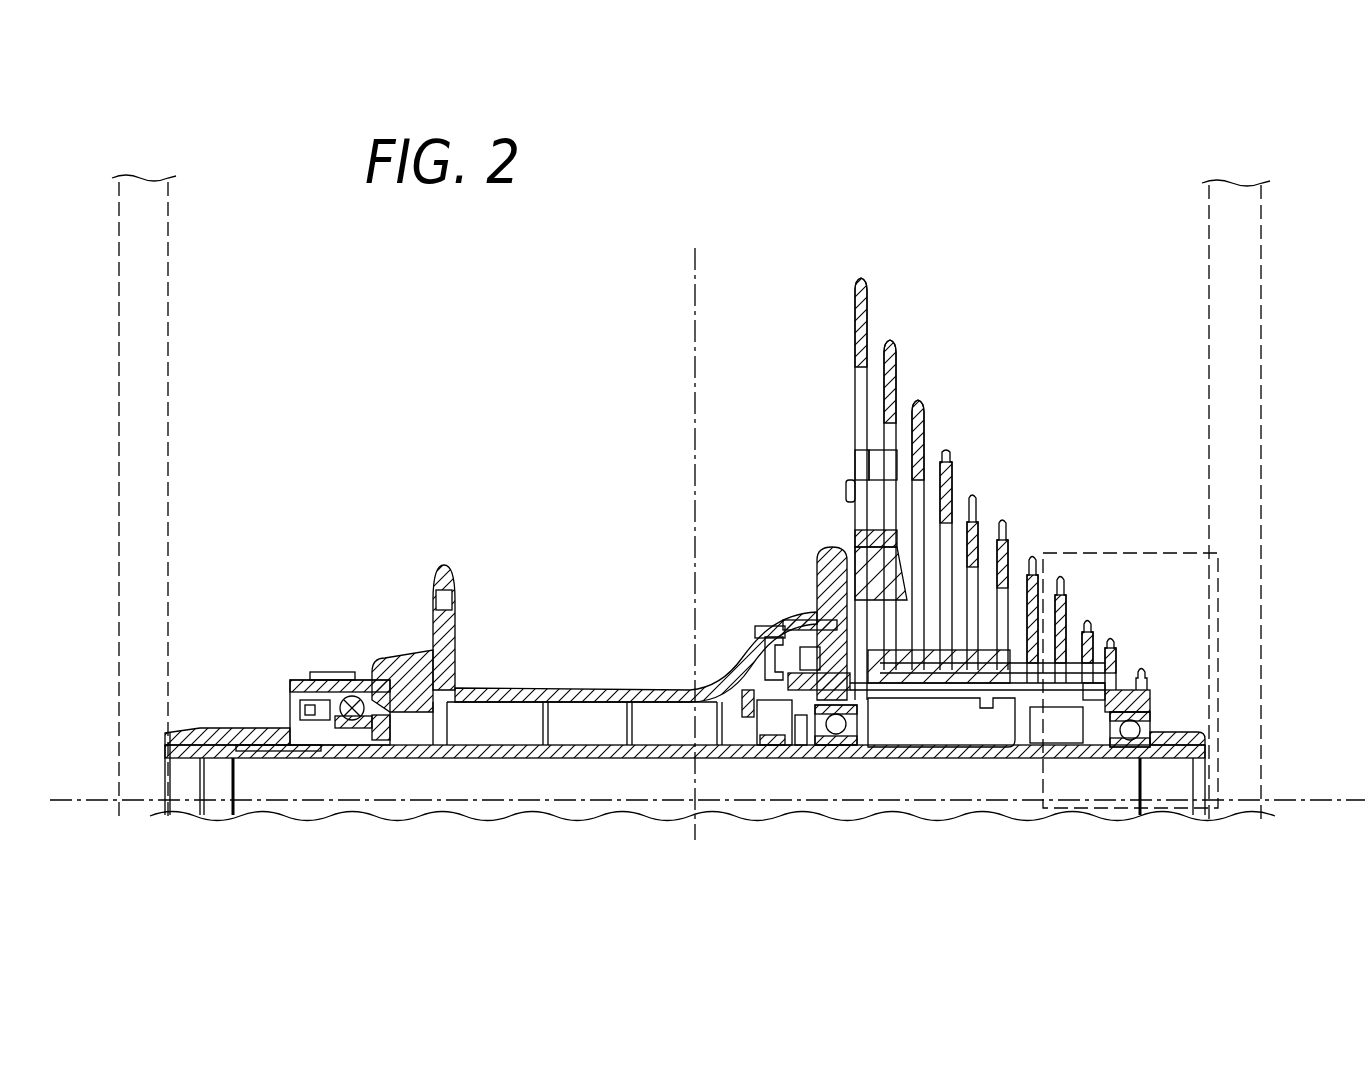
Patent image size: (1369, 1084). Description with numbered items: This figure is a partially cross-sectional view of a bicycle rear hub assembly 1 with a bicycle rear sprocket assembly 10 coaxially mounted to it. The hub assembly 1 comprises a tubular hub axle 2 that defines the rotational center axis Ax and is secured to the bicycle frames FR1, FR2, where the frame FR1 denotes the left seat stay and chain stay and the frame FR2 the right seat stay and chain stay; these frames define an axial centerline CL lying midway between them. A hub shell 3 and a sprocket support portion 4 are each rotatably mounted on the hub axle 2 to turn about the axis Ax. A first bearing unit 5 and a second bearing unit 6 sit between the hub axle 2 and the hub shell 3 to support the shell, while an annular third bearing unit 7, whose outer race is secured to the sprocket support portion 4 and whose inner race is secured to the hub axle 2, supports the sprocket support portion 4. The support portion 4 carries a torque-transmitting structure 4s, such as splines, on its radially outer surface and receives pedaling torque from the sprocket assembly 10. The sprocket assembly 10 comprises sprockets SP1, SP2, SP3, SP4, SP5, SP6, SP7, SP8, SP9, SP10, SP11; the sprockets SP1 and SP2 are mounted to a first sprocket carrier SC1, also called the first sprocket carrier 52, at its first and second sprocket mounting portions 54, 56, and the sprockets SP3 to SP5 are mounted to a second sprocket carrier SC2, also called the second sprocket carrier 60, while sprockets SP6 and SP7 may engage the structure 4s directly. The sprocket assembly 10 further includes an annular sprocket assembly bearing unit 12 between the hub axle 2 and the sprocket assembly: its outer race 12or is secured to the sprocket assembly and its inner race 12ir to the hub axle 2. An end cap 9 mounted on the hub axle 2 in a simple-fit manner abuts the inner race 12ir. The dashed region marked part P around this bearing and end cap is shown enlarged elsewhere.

The bicycle rear hub assembly 1 is at (436, 548).
The hub axle 2 is at (303, 758).
The hub shell 3 is at (512, 688).
The sprocket support portion 4 is at (940, 612).
The torque-transmitting structure 4s is at (760, 626).
The first bearing unit 5 is at (370, 740).
The second bearing unit 6 is at (742, 682).
The third bearing unit 7 is at (840, 735).
The end cap 9 is at (1203, 750).
The bicycle rear sprocket assembly 10 is at (1026, 453).
The sprocket assembly bearing unit 12 is at (1092, 748).
The inner race 12ir is at (1130, 745).
The outer race 12or is at (1150, 702).
The first sprocket carrier 52 is at (853, 563).
The first sprocket mounting portion 54 is at (857, 453).
The second sprocket mounting portion 56 is at (888, 478).
The second sprocket carrier 60 is at (958, 698).
The first sprocket carrier SC1 is at (811, 544).
The second sprocket carrier SC2 is at (977, 761).
The sprocket SP1 is at (861, 280).
The sprocket SP2 is at (890, 342).
The sprocket SP3 is at (918, 402).
The sprocket SP4 is at (946, 450).
The sprocket SP5 is at (972, 492).
The sprocket SP6 is at (1002, 517).
The sprocket SP7 is at (1032, 555).
The sprocket SP8 is at (1060, 573).
The sprocket SP9 is at (1087, 617).
The sprocket SP10 is at (1110, 635).
The bicycle rear sprocket SP11 is at (1141, 665).
The bicycle frame FR1 is at (170, 214).
The bicycle frame FR2 is at (1262, 215).
The axial centerline CL is at (697, 277).
The part P is at (1218, 612).
The rotational center axis Ax is at (707, 769).